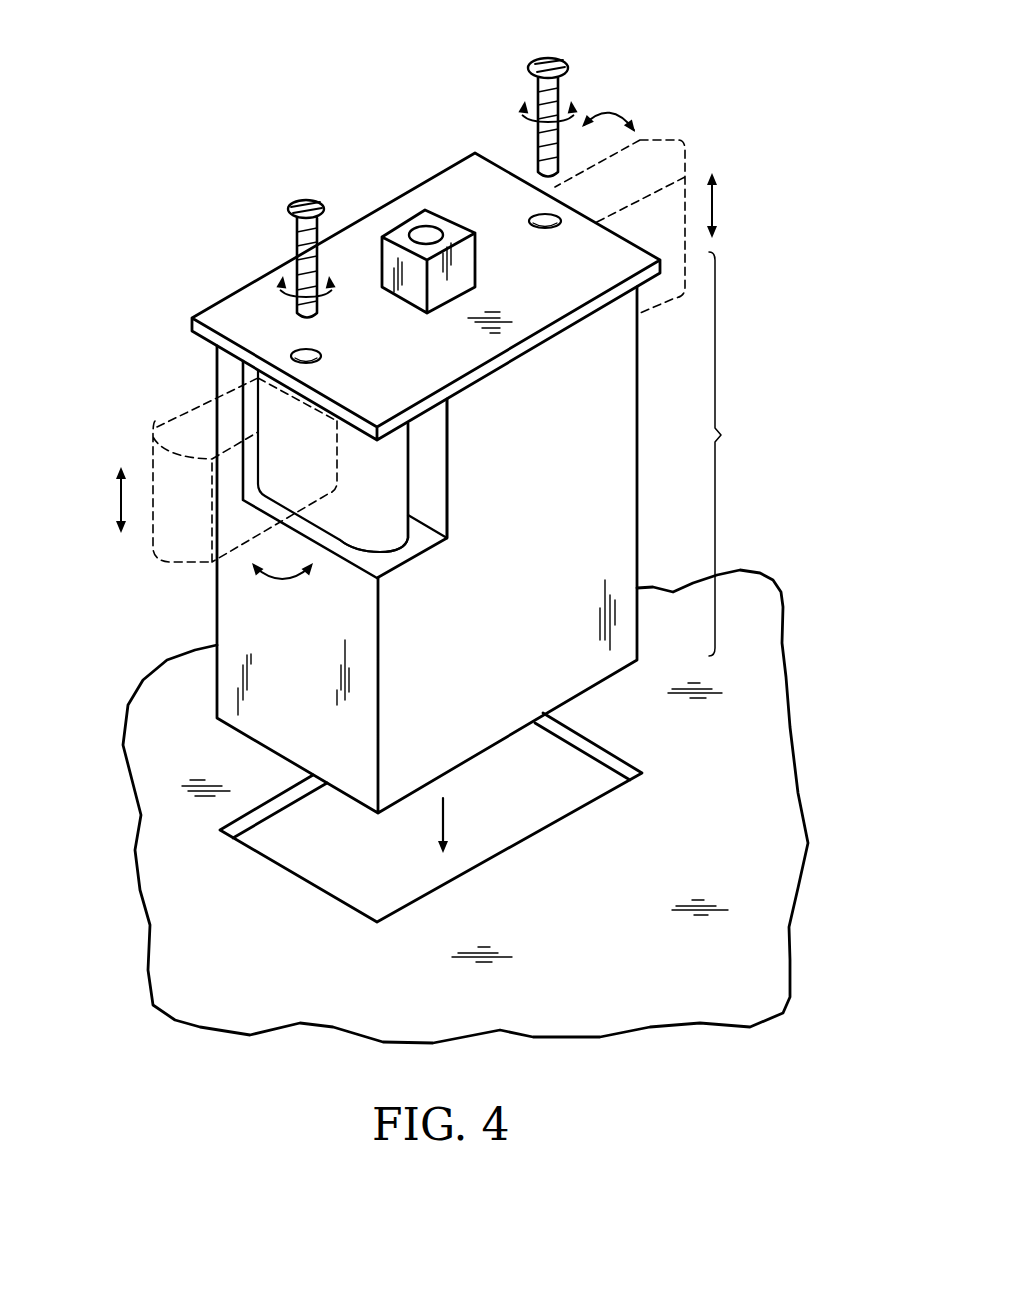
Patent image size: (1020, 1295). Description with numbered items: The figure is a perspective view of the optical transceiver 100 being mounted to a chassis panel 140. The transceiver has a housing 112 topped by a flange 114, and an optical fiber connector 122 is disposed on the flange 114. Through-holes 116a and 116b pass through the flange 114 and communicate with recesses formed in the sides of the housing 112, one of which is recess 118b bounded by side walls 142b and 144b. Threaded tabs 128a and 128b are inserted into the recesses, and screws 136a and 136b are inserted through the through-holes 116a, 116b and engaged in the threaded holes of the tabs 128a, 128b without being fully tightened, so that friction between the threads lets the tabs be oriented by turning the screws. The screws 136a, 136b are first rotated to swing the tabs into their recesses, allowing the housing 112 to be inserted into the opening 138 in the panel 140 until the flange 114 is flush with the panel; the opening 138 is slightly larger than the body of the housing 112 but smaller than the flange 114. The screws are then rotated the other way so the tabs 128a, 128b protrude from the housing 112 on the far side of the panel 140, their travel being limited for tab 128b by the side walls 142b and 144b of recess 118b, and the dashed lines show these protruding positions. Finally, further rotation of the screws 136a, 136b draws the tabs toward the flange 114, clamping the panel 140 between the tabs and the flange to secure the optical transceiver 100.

The optical transceiver 100 is at (420, 419).
The housing 112 is at (452, 532).
The flange 114 is at (215, 302).
The through-hole 116a is at (323, 352).
The through-hole 116b is at (543, 229).
The recess 118b is at (463, 523).
The optical fiber connector 122 is at (425, 208).
The tab 128a is at (683, 137).
The tab 128b is at (155, 421).
The screw 136a is at (560, 56).
The screw 136b is at (292, 202).
The opening 138 is at (563, 820).
The chassis panel 140 is at (490, 806).
The side wall 142b is at (242, 376).
The side wall 144b is at (437, 462).